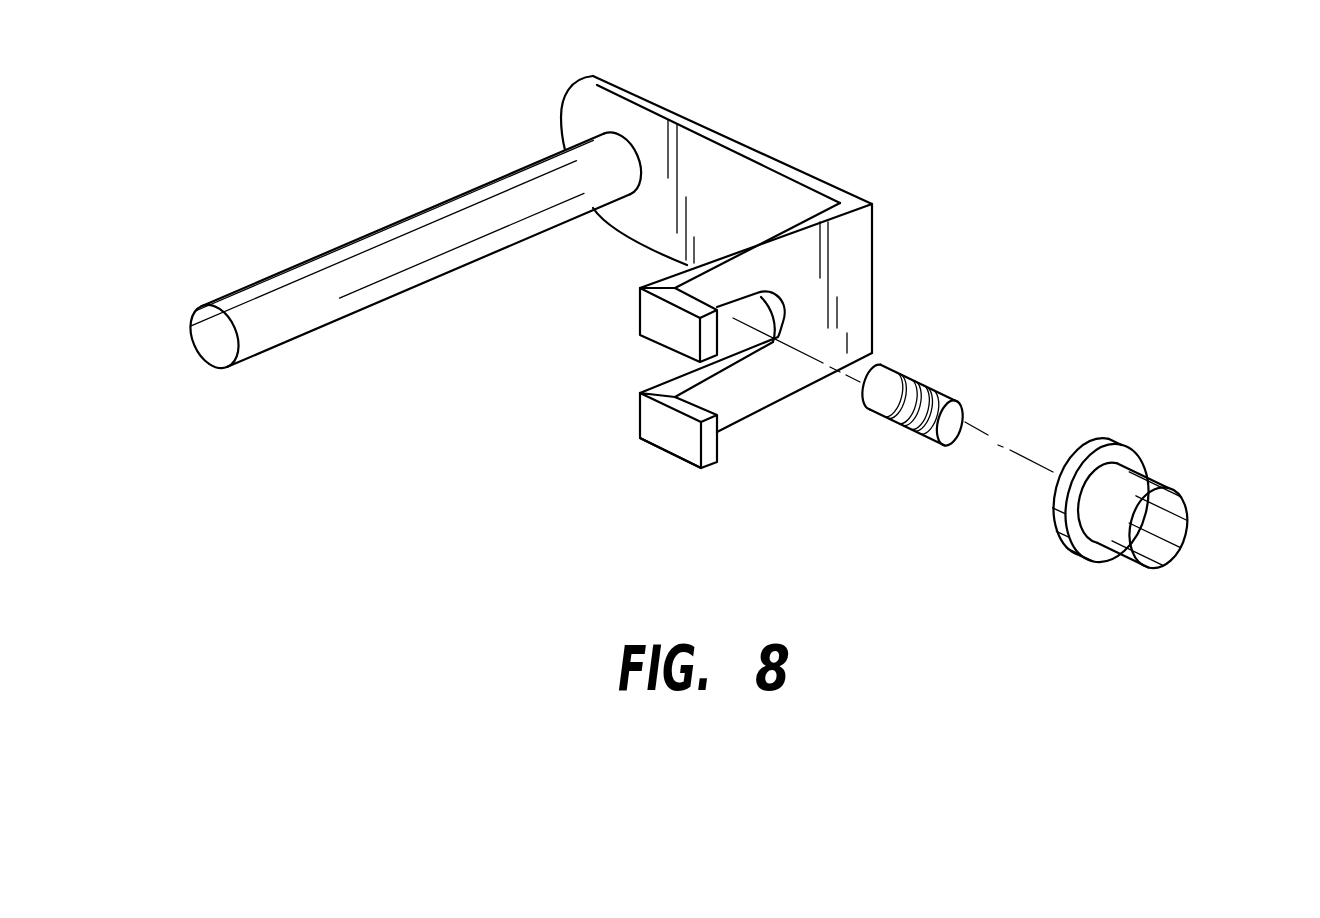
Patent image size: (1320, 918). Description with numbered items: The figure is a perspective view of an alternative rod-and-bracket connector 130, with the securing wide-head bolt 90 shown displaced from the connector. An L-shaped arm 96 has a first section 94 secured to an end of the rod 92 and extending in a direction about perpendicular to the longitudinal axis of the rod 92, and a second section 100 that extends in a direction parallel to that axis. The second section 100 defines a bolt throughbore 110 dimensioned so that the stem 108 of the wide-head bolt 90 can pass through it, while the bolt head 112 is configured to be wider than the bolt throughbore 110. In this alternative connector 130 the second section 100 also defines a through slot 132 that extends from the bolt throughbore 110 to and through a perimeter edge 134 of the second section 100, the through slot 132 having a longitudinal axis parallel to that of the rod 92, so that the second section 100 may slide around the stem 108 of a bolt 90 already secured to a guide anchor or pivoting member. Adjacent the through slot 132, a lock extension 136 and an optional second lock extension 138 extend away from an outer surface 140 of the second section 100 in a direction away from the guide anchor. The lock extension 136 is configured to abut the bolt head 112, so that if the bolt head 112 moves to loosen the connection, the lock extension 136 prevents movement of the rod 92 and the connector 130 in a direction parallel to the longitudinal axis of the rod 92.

The securing wide-head bolt 90 is at (728, 350).
The rod 92 is at (356, 240).
The first section of the L-shaped arm 94 is at (742, 137).
The L-shaped arm 96 is at (857, 317).
The second section of the L-shaped arm 100 is at (876, 303).
The stem 108 is at (930, 440).
The bolt throughbore 110 is at (767, 300).
The bolt head 112 is at (1123, 447).
The alternative rod-and-bracket connector 130 is at (777, 281).
The through slot 132 is at (665, 362).
The perimeter edge 134 is at (606, 456).
The lock extension 136 is at (690, 462).
The second lock extension 138 is at (641, 317).
The outer surface 140 is at (846, 322).